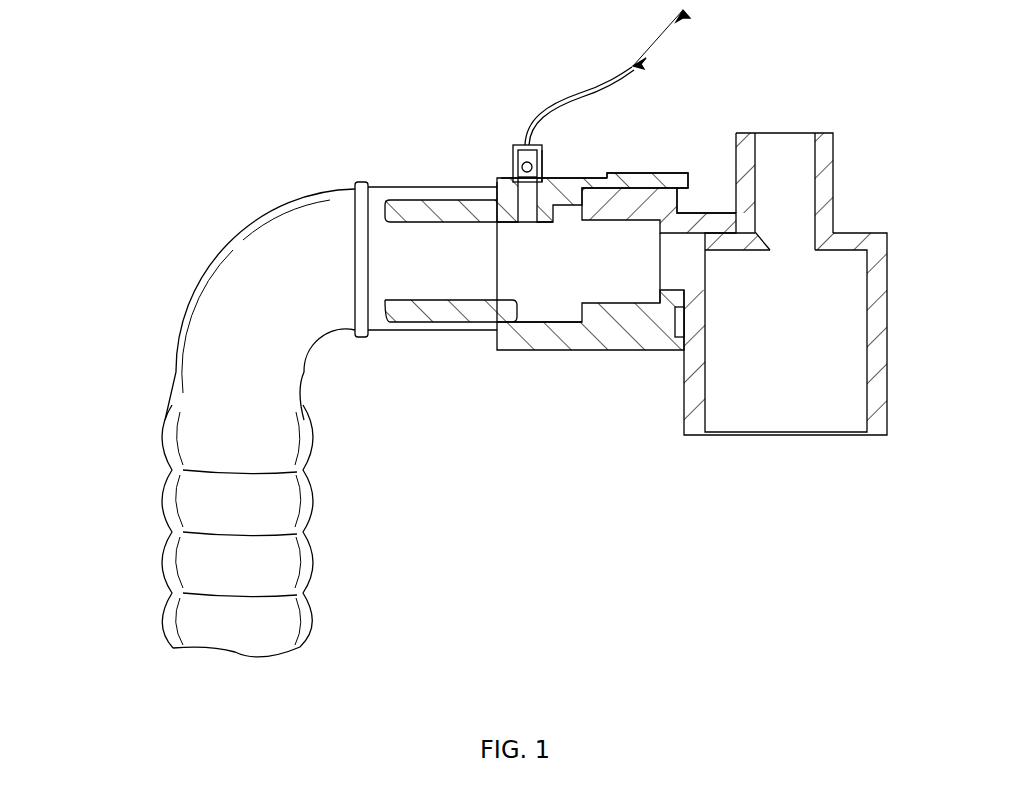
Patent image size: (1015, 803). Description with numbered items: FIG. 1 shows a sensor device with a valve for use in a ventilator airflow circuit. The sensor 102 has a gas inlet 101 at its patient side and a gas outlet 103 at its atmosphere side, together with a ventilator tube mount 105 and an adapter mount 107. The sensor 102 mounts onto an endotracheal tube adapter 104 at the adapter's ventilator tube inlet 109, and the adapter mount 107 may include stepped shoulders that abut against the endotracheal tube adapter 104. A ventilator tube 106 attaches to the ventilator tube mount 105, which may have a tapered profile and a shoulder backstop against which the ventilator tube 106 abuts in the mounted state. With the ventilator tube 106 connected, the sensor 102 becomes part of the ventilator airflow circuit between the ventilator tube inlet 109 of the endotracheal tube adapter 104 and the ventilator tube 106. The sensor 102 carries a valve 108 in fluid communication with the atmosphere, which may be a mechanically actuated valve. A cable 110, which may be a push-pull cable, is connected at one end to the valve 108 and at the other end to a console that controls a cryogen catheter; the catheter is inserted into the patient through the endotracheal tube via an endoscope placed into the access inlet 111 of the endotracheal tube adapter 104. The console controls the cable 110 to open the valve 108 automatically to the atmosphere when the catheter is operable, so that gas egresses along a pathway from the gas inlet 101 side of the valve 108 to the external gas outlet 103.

The gas inlet 101 is at (507, 180).
The sensor 102 is at (567, 352).
The gas outlet 103 is at (512, 163).
The endotracheal tube adapter 104 is at (888, 275).
The ventilator tube mount 105 is at (383, 250).
The ventilator tube 106 is at (183, 325).
The adapter mount 107 is at (635, 352).
The valve 108 is at (543, 167).
The ventilator tube inlet 109 is at (640, 202).
The cable 110 is at (565, 100).
The access inlet 111 is at (790, 133).